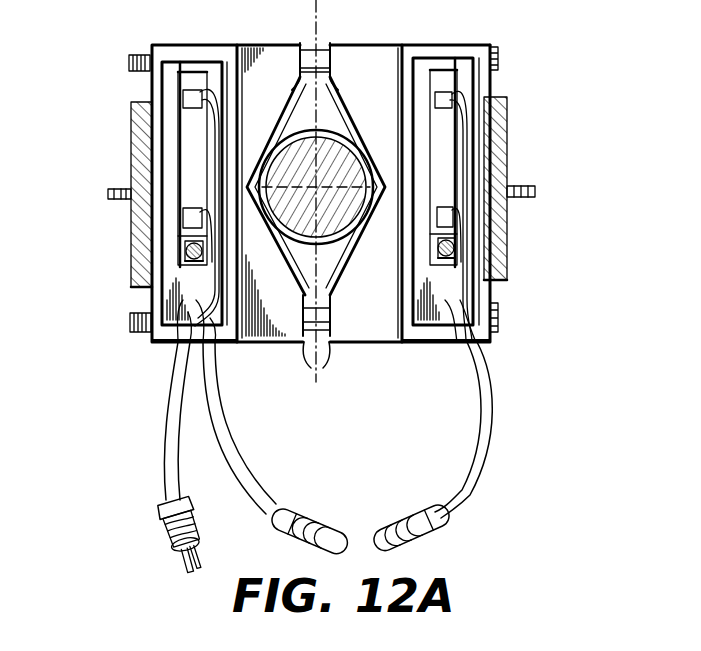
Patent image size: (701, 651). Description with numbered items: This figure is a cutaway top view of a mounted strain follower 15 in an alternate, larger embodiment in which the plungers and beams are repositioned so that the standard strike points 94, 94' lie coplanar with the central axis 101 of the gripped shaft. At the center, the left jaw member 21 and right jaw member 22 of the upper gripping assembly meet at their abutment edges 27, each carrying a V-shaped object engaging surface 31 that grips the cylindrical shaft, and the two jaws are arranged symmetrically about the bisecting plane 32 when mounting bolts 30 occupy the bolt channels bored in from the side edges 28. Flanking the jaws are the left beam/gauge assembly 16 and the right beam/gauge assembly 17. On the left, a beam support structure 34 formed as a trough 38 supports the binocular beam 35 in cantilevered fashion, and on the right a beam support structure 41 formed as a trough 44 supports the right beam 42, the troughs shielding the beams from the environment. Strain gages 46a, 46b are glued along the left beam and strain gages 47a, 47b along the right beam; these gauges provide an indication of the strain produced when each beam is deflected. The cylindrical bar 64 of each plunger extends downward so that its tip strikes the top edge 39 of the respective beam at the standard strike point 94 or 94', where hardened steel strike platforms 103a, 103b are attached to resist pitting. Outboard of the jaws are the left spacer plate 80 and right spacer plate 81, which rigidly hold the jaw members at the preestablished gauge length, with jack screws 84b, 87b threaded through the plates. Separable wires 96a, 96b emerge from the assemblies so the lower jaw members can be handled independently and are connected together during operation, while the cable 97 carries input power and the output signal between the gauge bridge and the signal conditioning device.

The fiber clamping assembly 15 is at (334, 25).
The left beam/gauge assembly 16 is at (205, 44).
The right beam/gauge assembly 17 is at (435, 44).
The left jaw member 21 is at (262, 50).
The right jaw member 22 is at (355, 52).
The abutment edge 27 is at (308, 352).
The side edge 28 is at (142, 304).
The mounting bolts 30 is at (497, 48).
The object engaging surface 31 is at (345, 258).
The bisecting plane 32 is at (316, 378).
The beam support structure 34 is at (161, 349).
The beam 35 is at (170, 127).
The trough 38 is at (175, 290).
The top edge 39 is at (185, 152).
The beam support structure 41 is at (485, 349).
The right beam 42 is at (456, 147).
The trough 44 is at (473, 294).
The strain gage 46a is at (185, 98).
The strain gage 46b is at (185, 206).
The strain gage 47a is at (435, 100).
The strain gage 47b is at (418, 246).
The cylindrical bar 64 is at (180, 250).
The left spacer plate 80 is at (140, 147).
The right spacer plate 81 is at (500, 160).
The jack screw 84b is at (110, 194).
The jack screw 87b is at (538, 190).
The standard strike point 94 is at (146, 269).
The standard strike point 94' is at (498, 251).
The separable wire 96a is at (273, 518).
The separable wire 96b is at (465, 496).
The cable 97 is at (168, 478).
The central axis 101 is at (294, 251).
The strike platform 103a is at (180, 234).
The strike platform 103b is at (456, 238).